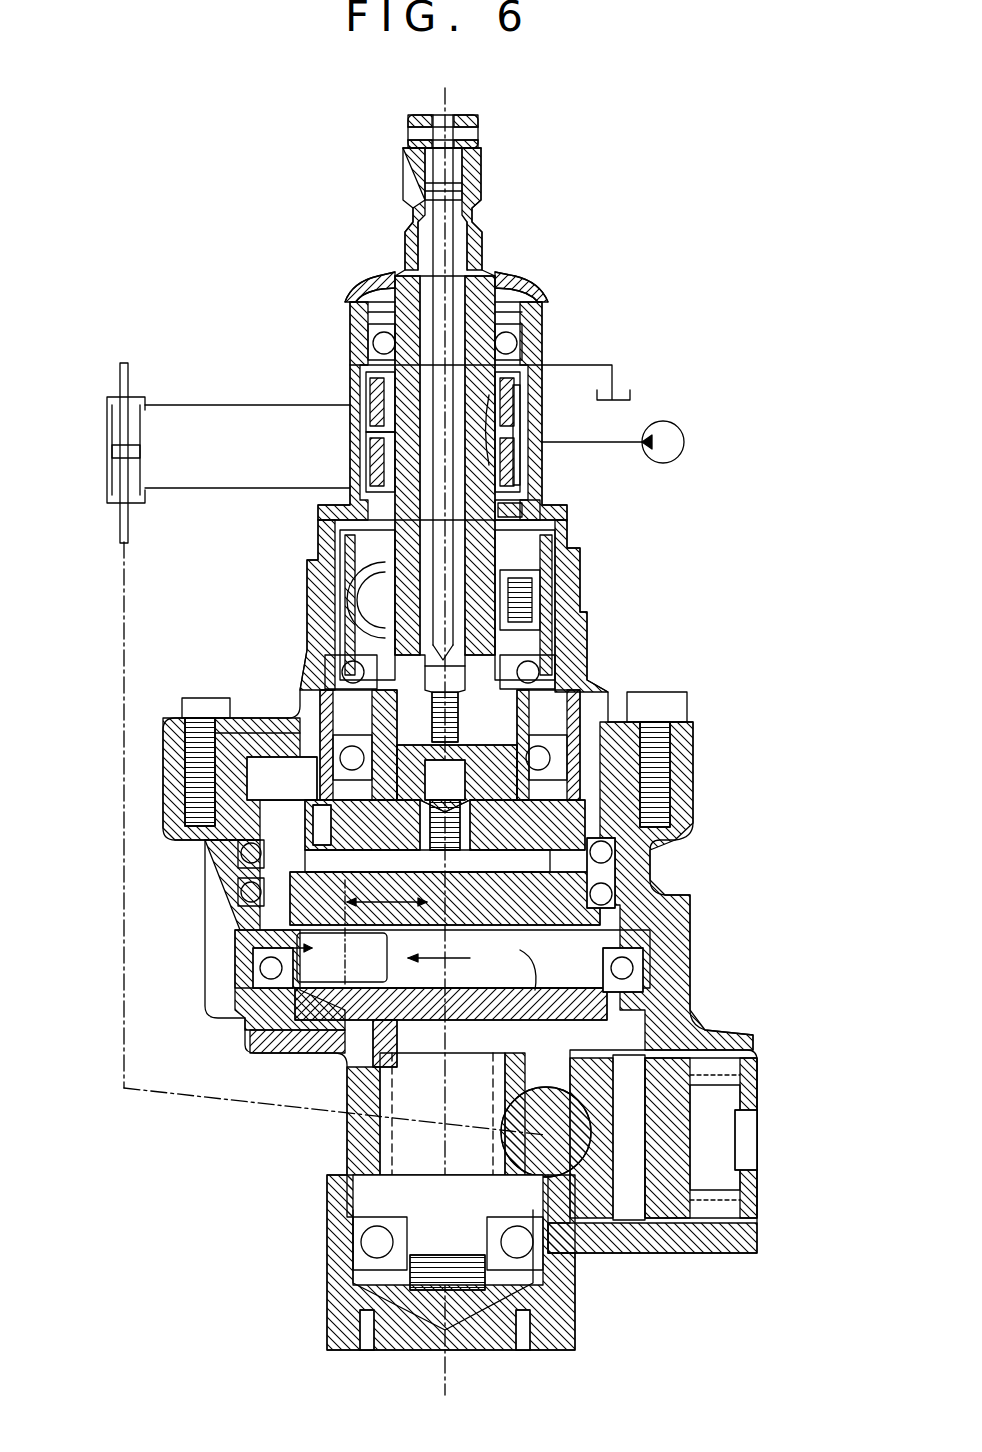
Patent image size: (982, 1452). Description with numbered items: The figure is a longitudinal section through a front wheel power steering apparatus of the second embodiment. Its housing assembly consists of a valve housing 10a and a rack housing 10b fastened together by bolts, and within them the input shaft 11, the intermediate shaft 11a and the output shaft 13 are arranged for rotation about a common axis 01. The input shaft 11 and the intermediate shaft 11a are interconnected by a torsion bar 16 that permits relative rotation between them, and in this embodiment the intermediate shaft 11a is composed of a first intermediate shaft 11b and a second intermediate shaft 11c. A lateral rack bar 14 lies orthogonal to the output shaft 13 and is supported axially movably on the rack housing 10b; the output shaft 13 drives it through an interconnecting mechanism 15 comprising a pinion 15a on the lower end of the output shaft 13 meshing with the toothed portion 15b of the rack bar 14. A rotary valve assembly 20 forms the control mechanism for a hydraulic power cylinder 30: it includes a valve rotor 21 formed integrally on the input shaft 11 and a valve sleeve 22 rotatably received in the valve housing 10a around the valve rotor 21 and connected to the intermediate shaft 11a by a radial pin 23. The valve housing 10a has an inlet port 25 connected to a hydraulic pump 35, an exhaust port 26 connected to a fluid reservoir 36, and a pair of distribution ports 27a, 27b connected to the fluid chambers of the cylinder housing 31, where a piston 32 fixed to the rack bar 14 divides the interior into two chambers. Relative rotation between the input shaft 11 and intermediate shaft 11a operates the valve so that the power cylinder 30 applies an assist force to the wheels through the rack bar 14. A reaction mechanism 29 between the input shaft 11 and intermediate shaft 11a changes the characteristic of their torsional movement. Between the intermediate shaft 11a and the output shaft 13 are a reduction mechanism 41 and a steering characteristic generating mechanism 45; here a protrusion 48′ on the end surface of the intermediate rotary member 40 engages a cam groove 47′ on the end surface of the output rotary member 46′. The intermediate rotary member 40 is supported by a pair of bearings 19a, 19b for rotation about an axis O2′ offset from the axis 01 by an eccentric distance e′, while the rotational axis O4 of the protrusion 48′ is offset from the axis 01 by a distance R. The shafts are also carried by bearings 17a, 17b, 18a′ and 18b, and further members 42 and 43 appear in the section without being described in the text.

The common axis 01 is at (445, 99).
The input shaft 11 is at (405, 258).
The torsion bar 16 is at (453, 262).
The upper bearing 17a is at (376, 340).
The exhaust port 26 is at (545, 368).
The distribution port 27a is at (372, 396).
The distribution port 27b is at (372, 486).
The valve rotor 21 is at (505, 400).
The valve sleeve 22 is at (501, 442).
The fluid reservoir 36 is at (632, 392).
The hydraulic pump 35 is at (679, 428).
The inlet port 25 is at (515, 448).
The rotary valve assembly 20 is at (517, 462).
The radial pin 23 is at (560, 535).
The reaction mechanism 29 is at (372, 570).
The valve housing 10a is at (312, 592).
The intermediate shaft 11a is at (240, 632).
The first intermediate shaft 11b is at (330, 666).
The second intermediate shaft 11c is at (335, 690).
The lower bearing 17b is at (540, 670).
The hydraulic power cylinder 30 is at (102, 425).
The piston 32 is at (130, 450).
The cylinder housing 31 is at (107, 470).
The rack bar 14 is at (128, 522).
The bolt 43 is at (205, 812).
The eccentric member 42 is at (318, 800).
The intermediate rotary member 40 is at (570, 852).
The reduction mechanism 41 is at (560, 875).
The bearing 19a is at (240, 852).
The bearing 19b is at (240, 892).
The rotational axis of the protrusion O4 is at (346, 929).
The distance R is at (387, 890).
The steering characteristic generating mechanism 45 is at (590, 945).
The protrusion 48′ is at (212, 948).
The output rotary member 46′ is at (248, 1025).
The eccentric distance e′ is at (453, 960).
The cam groove 47′ is at (548, 966).
The bearing 18a′ is at (640, 978).
The axis of intermediate rotary member O2′ is at (422, 1020).
The output shaft 13 is at (400, 1140).
The pinion 15a is at (370, 1192).
The toothed portion 15b is at (528, 1140).
The rack housing 10b is at (330, 1226).
The bearing 18b is at (360, 1250).
The interconnecting mechanism 15 is at (575, 1253).